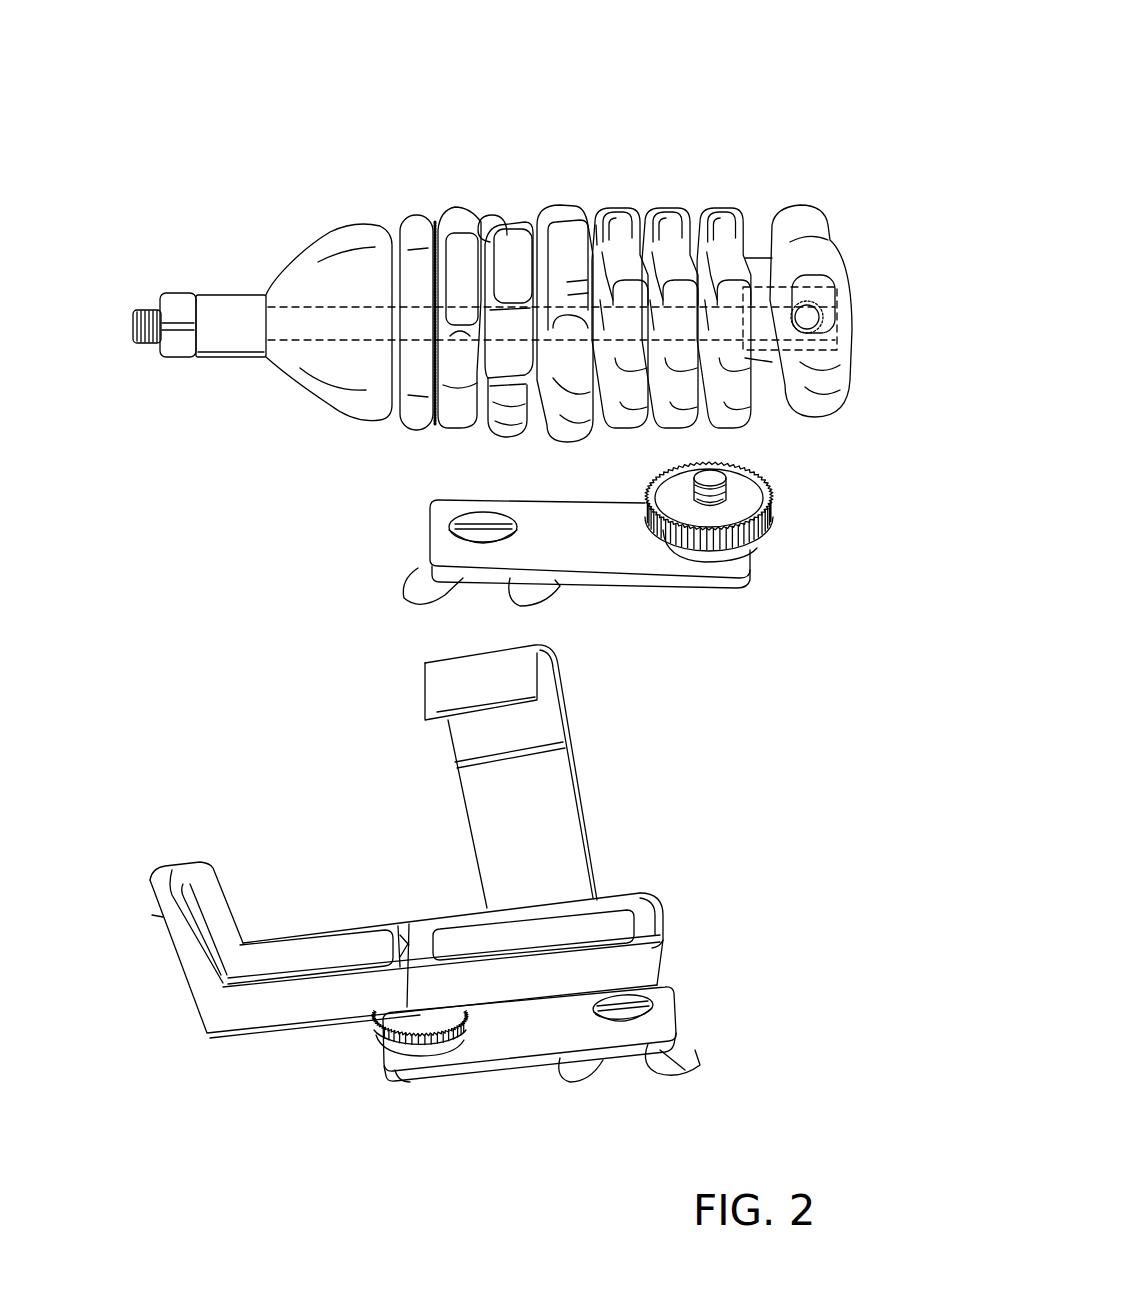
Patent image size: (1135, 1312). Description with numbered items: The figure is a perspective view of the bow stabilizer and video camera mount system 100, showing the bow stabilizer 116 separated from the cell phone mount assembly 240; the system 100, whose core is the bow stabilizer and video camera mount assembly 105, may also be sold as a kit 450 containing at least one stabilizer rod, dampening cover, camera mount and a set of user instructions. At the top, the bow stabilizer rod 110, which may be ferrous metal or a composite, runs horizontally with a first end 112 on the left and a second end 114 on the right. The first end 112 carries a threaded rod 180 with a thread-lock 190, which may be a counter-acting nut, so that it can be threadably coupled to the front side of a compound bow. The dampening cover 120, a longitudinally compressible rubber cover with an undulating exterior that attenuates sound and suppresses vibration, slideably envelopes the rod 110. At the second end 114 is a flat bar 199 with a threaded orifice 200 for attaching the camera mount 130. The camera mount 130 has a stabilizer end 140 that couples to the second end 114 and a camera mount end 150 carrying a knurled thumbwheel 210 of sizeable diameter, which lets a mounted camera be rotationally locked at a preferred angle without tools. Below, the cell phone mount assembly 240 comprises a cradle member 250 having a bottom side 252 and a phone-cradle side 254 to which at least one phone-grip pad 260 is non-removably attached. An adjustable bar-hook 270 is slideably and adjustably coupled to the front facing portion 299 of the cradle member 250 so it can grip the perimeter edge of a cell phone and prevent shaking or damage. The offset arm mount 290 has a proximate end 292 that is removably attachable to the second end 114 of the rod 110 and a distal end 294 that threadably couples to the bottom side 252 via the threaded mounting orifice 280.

The bow stabilizer and video camera mount system 100 is at (743, 72).
The bow stabilizer and video camera mount assembly 105 is at (760, 100).
The kit 450 is at (777, 133).
The bow stabilizer 116 is at (400, 152).
The dampening cover 120 is at (615, 205).
The bow stabilizer rod 110 is at (325, 303).
The first end 112 is at (148, 300).
The threaded rod 180 is at (144, 346).
The thread-lock 190 is at (178, 366).
The second end 114 is at (812, 285).
The threaded orifice 200 is at (820, 300).
The flat bar 199 is at (840, 330).
The stabilizer end 140 is at (423, 508).
The thumbwheel 210 is at (768, 490).
The camera mount end 150 is at (752, 550).
The camera mount 130 is at (618, 585).
The cell phone mount assembly 240 is at (283, 708).
The adjustable bar-hook 270 is at (562, 705).
The phone-grip pad 260 is at (603, 918).
The phone-cradle side 254 is at (400, 945).
The front facing portion 299 is at (437, 905).
The cradle member 250 is at (655, 895).
The proximate end 292 is at (680, 1013).
The bottom side 252 is at (278, 1030).
The threaded mounting orifice 280 is at (387, 1060).
The offset arm mount 290 is at (485, 1070).
The distal end 294 is at (415, 1085).